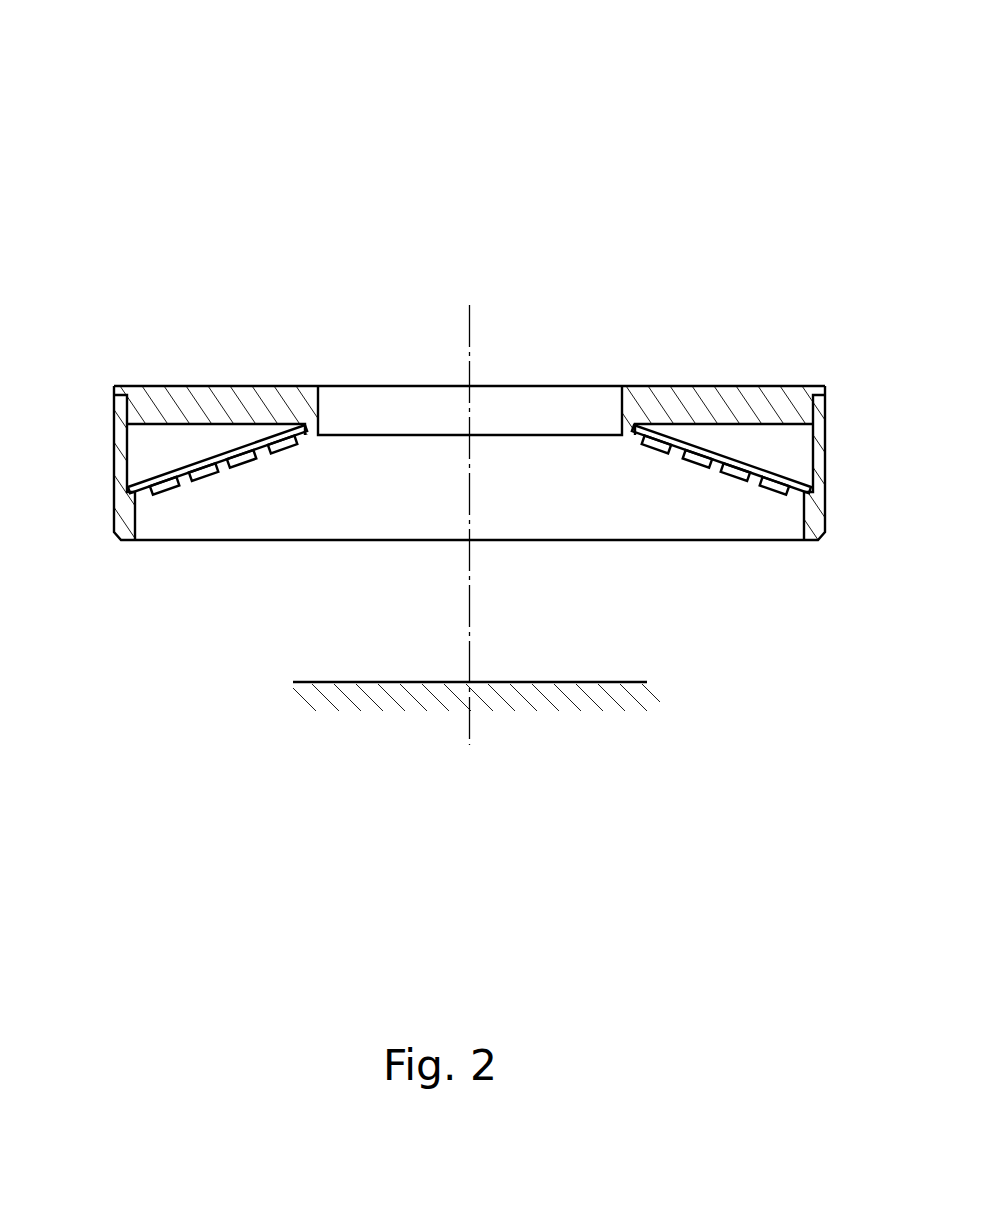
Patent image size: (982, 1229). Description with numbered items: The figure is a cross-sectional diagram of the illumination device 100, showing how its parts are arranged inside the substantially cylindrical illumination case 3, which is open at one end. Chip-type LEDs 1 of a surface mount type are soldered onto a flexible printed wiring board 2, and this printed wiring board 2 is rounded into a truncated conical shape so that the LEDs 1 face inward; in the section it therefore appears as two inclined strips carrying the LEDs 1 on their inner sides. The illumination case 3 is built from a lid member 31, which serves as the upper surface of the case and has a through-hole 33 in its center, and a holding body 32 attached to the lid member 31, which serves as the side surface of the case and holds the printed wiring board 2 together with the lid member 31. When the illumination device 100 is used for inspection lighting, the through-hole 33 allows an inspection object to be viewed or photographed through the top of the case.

The illumination device 100 is at (137, 122).
The chip-type LED 1 is at (163, 498).
The flexible printed wiring board 2 is at (260, 441).
The illumination case 3 is at (775, 303).
The lid member 31 is at (192, 386).
The holding body 32 is at (114, 455).
The through-hole 33 is at (479, 381).